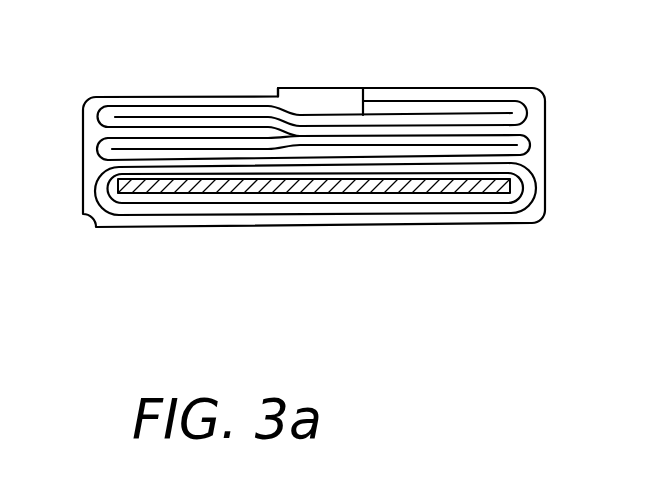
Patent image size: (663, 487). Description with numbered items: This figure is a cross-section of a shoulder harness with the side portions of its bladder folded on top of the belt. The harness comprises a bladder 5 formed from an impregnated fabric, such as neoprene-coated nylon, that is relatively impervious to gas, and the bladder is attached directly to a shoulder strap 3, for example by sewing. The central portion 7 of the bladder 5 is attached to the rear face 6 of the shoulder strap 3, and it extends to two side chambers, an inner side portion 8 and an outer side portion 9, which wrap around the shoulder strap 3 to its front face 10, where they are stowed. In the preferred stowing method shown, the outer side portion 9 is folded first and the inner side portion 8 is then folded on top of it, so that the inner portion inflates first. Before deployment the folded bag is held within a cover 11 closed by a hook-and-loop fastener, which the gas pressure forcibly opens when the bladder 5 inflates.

The shoulder strap 3 is at (120, 188).
The bladder 5 is at (510, 160).
The rear face 6 is at (347, 203).
The central portion 7 is at (245, 228).
The inner side portion 8 is at (512, 110).
The outer side portion 9 is at (97, 145).
The front face 10 is at (472, 168).
The cover 11 is at (305, 87).